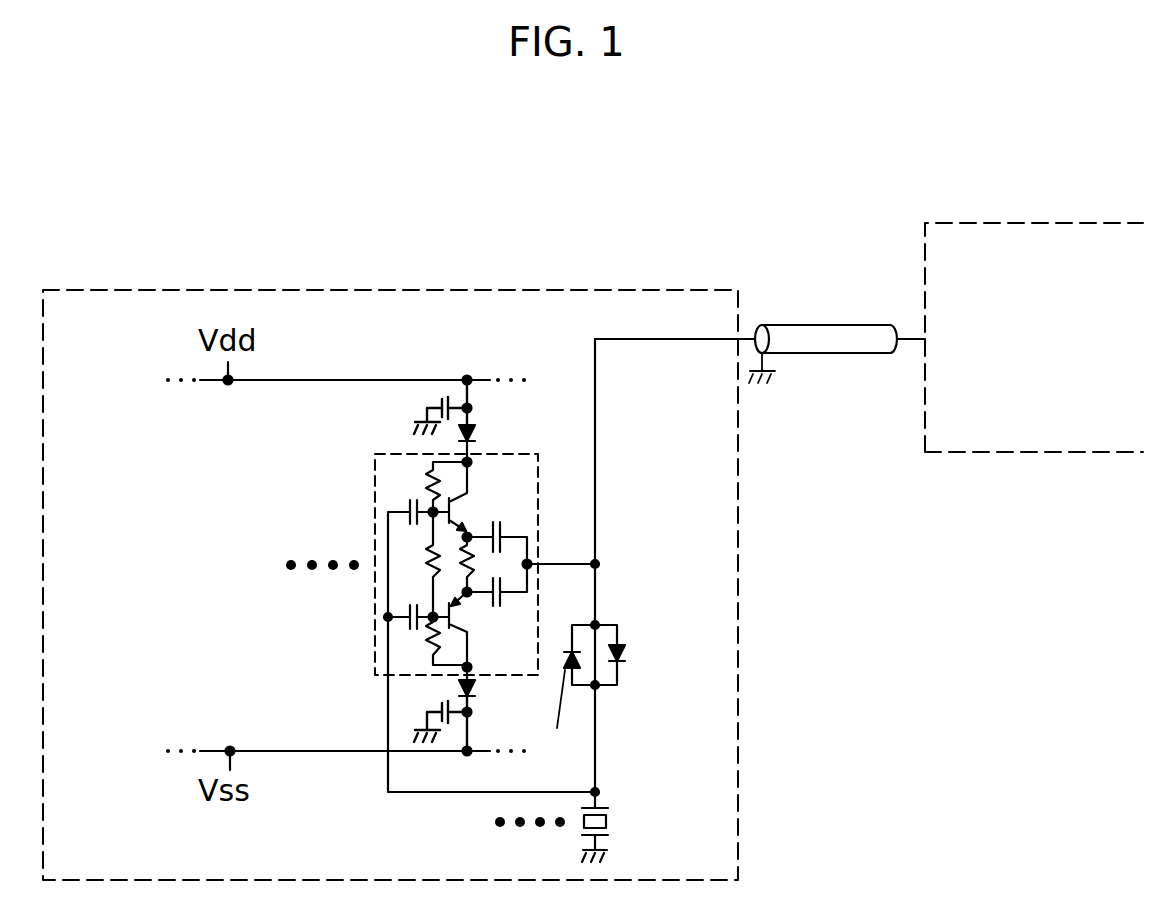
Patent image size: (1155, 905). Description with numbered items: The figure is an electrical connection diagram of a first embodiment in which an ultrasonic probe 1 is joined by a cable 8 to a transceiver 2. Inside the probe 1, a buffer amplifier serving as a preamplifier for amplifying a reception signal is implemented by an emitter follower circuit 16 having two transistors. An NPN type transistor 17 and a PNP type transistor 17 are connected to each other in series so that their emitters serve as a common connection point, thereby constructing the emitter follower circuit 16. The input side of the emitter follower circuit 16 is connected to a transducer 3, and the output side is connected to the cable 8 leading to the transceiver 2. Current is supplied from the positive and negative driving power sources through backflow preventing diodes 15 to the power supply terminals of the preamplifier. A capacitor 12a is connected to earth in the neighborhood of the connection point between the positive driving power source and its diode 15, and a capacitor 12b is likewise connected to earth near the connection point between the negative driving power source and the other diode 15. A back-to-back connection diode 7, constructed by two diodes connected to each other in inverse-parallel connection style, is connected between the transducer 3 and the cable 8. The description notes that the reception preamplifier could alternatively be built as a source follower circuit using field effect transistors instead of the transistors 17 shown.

The ultrasonic probe 1 is at (271, 290).
The transceiver 2 is at (999, 223).
The transducer 3 is at (612, 820).
The back-to-back connection diode 7 is at (598, 643).
The cable 8 is at (803, 326).
The capacitor 12a is at (440, 398).
The capacitor 12b is at (460, 722).
The diode 15 is at (478, 437).
The emitter follower circuit 16 is at (446, 564).
The transistor 17 is at (466, 510).